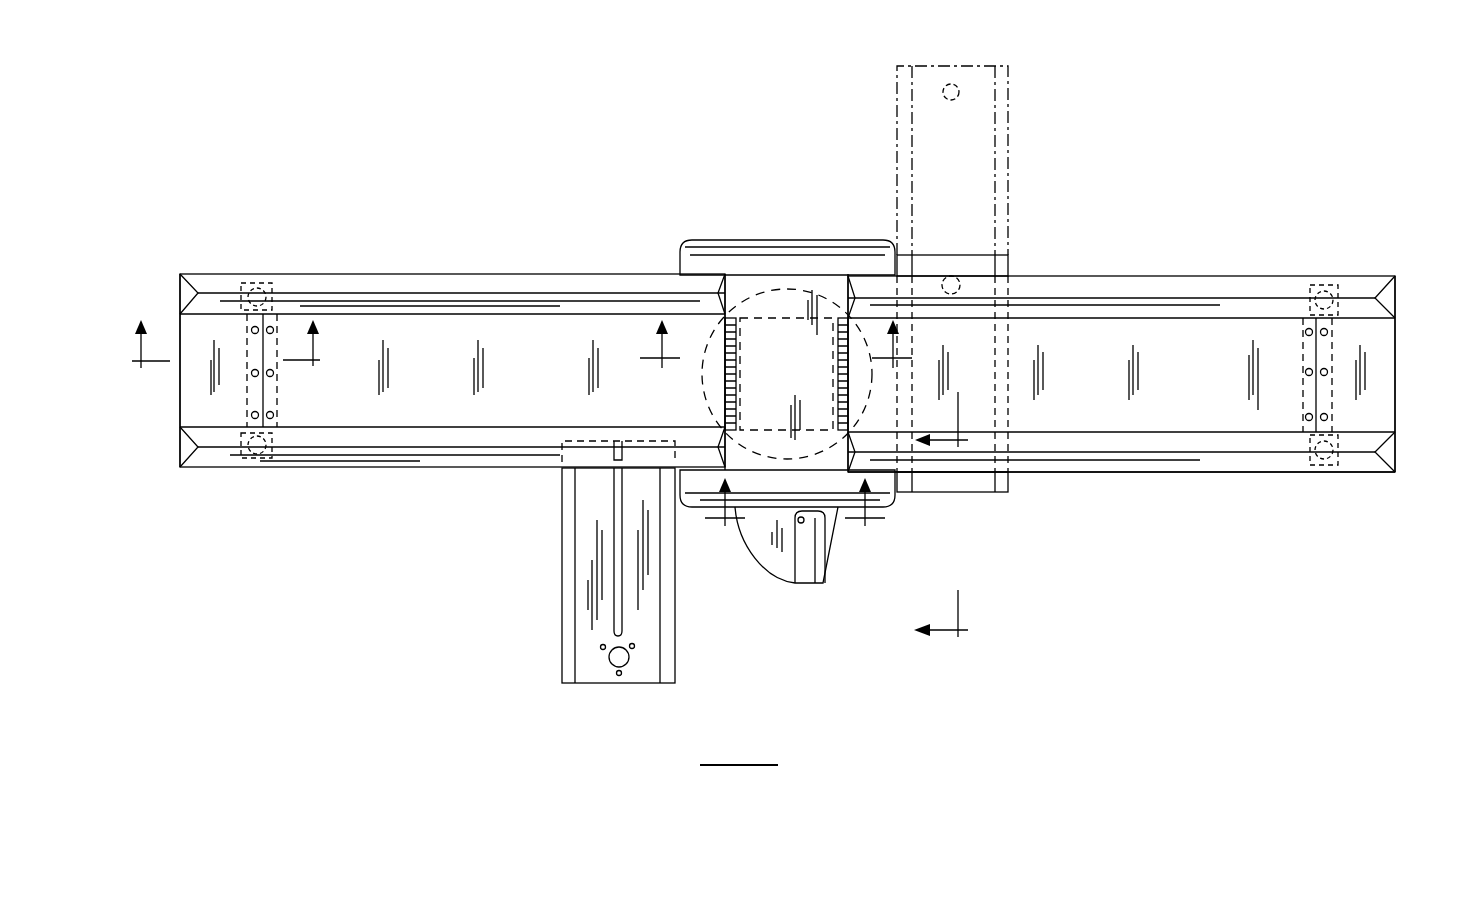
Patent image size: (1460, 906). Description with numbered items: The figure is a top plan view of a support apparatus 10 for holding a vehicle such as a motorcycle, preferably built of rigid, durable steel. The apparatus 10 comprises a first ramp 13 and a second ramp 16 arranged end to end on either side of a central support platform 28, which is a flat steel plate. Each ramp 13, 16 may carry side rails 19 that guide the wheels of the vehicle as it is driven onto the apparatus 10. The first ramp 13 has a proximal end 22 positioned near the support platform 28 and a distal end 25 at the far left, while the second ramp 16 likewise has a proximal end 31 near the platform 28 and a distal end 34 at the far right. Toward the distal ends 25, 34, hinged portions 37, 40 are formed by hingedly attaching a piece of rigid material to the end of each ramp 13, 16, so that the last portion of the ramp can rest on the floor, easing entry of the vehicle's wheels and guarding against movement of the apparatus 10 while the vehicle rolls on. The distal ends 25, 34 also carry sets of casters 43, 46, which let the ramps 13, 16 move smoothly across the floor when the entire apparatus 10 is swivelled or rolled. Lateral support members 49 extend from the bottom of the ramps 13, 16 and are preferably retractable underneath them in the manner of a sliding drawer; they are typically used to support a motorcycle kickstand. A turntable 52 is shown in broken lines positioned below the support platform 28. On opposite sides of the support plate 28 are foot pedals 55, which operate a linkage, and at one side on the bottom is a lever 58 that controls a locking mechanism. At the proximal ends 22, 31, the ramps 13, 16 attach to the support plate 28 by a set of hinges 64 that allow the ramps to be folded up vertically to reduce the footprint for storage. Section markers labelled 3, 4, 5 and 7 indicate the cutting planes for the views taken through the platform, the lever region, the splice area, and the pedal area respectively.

The support apparatus 10 is at (338, 148).
The first ramp 13 is at (408, 335).
The second ramp 16 is at (1095, 340).
The side rails 19 is at (510, 295).
The proximal end 22 is at (661, 250).
The distal end 25 is at (166, 258).
The support platform 28 is at (832, 290).
The proximal end 31 is at (910, 508).
The distal end 34 is at (1397, 262).
The hinged portion 37 is at (200, 397).
The hinged portion 40 is at (1375, 345).
The casters 43 is at (258, 283).
The casters 46 is at (1325, 285).
The lateral support members 49 is at (975, 148).
The turntable 52 is at (785, 290).
The foot pedals 55 is at (720, 248).
The lever 58 is at (798, 557).
The hinges 64 is at (845, 368).
The section line 3- 3 is at (776, 358).
The section line 4- 4 is at (941, 532).
The section line 5- 5 is at (232, 351).
The section line 7- 7 is at (795, 518).